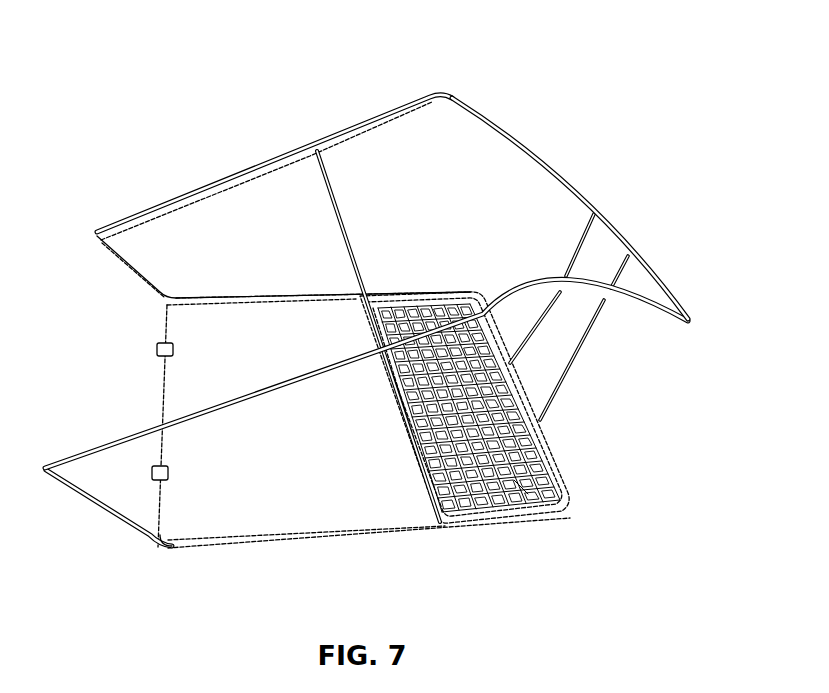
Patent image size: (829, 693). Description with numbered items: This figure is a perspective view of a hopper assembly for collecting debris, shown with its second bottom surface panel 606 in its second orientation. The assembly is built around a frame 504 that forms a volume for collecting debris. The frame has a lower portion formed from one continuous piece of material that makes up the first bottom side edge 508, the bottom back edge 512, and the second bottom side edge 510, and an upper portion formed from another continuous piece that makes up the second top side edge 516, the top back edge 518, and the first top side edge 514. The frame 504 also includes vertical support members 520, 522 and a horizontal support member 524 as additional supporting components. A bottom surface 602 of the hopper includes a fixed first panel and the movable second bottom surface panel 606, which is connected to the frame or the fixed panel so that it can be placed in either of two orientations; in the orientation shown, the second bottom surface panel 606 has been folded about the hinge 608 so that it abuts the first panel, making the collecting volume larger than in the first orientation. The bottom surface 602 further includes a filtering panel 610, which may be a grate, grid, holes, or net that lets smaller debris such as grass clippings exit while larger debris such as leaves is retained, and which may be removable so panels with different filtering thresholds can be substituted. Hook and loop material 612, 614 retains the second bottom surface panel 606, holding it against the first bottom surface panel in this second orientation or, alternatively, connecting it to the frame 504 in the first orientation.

The frame 504 is at (542, 92).
The first bottom side edge 508 is at (263, 540).
The second bottom side edge 510 is at (272, 298).
The bottom back edge 512 is at (570, 470).
The first top side edge 514 is at (655, 318).
The second top side edge 516 is at (468, 105).
The top back edge 518 is at (617, 227).
The vertical support member 520 is at (590, 337).
The vertical support member 522 is at (580, 250).
The horizontal support member 524 is at (343, 215).
The bottom surface 602 is at (387, 510).
The second bottom surface panel 606 is at (213, 507).
The hinge 608 is at (433, 527).
The filtering panel 610 is at (522, 487).
The hook and loop material 612 is at (152, 471).
The hook and loop material 614 is at (155, 347).